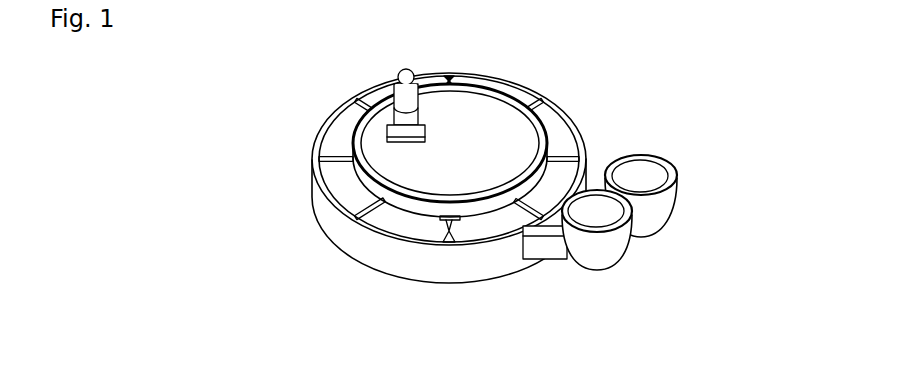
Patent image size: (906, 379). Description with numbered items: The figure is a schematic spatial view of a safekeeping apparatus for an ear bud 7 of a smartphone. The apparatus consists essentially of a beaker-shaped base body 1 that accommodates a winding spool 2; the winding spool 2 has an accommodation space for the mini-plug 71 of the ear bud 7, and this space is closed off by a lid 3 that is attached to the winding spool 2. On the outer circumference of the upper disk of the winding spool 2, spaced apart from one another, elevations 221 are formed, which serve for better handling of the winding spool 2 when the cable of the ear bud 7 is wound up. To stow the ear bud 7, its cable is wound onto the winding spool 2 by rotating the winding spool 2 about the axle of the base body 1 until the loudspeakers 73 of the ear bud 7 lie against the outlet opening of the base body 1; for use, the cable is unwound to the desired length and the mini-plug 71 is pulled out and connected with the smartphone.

The base body 1 is at (391, 259).
The winding spool 2 is at (566, 140).
The lid 3 is at (485, 107).
The elevations 221 is at (318, 159).
The ear bud 7 is at (537, 250).
The mini-plug 71 is at (407, 90).
The loudspeakers 73 is at (658, 212).